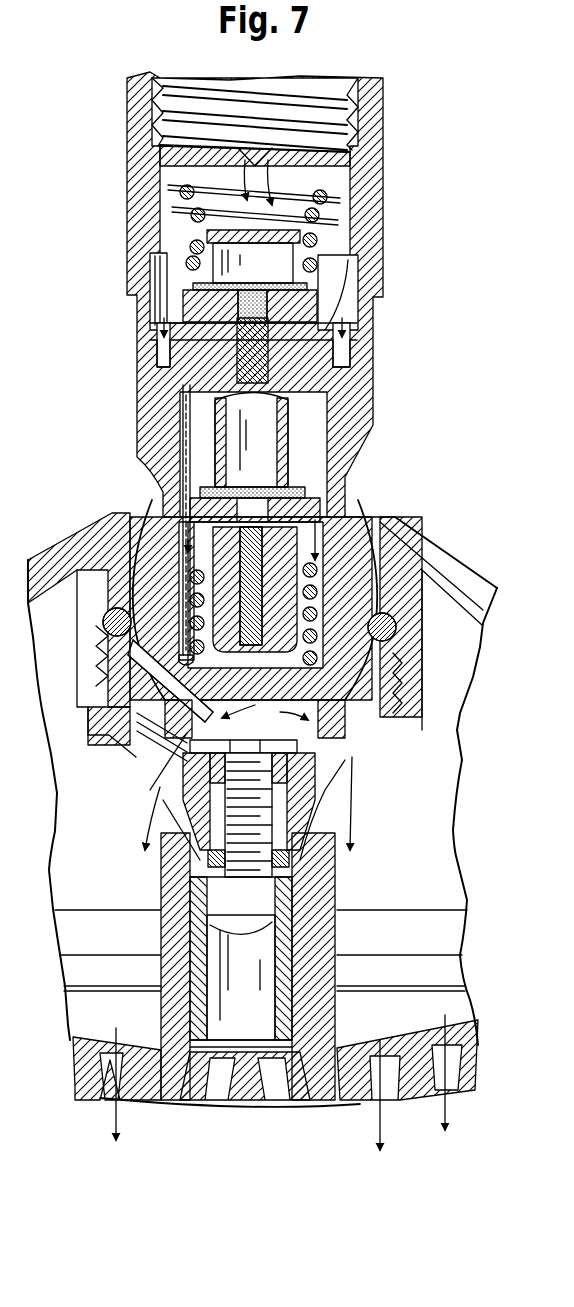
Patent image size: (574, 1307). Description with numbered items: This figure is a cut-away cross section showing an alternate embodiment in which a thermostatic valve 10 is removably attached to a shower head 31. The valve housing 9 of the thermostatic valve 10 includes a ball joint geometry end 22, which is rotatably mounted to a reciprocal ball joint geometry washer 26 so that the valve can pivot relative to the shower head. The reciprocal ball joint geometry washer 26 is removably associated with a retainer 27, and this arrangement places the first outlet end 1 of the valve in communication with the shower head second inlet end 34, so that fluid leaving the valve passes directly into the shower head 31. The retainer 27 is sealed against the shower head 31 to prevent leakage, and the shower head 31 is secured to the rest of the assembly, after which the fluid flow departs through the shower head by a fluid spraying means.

The thermostatic valve 10 is at (100, 240).
The valve housing 9 is at (140, 343).
The ball joint geometry end 22 is at (165, 503).
The reciprocal ball joint geometry washer 26 is at (368, 514).
The retainer 27 is at (410, 518).
The shower head 31 is at (463, 547).
The shower head second inlet end 34 is at (313, 731).
The first outlet end 1 is at (177, 728).